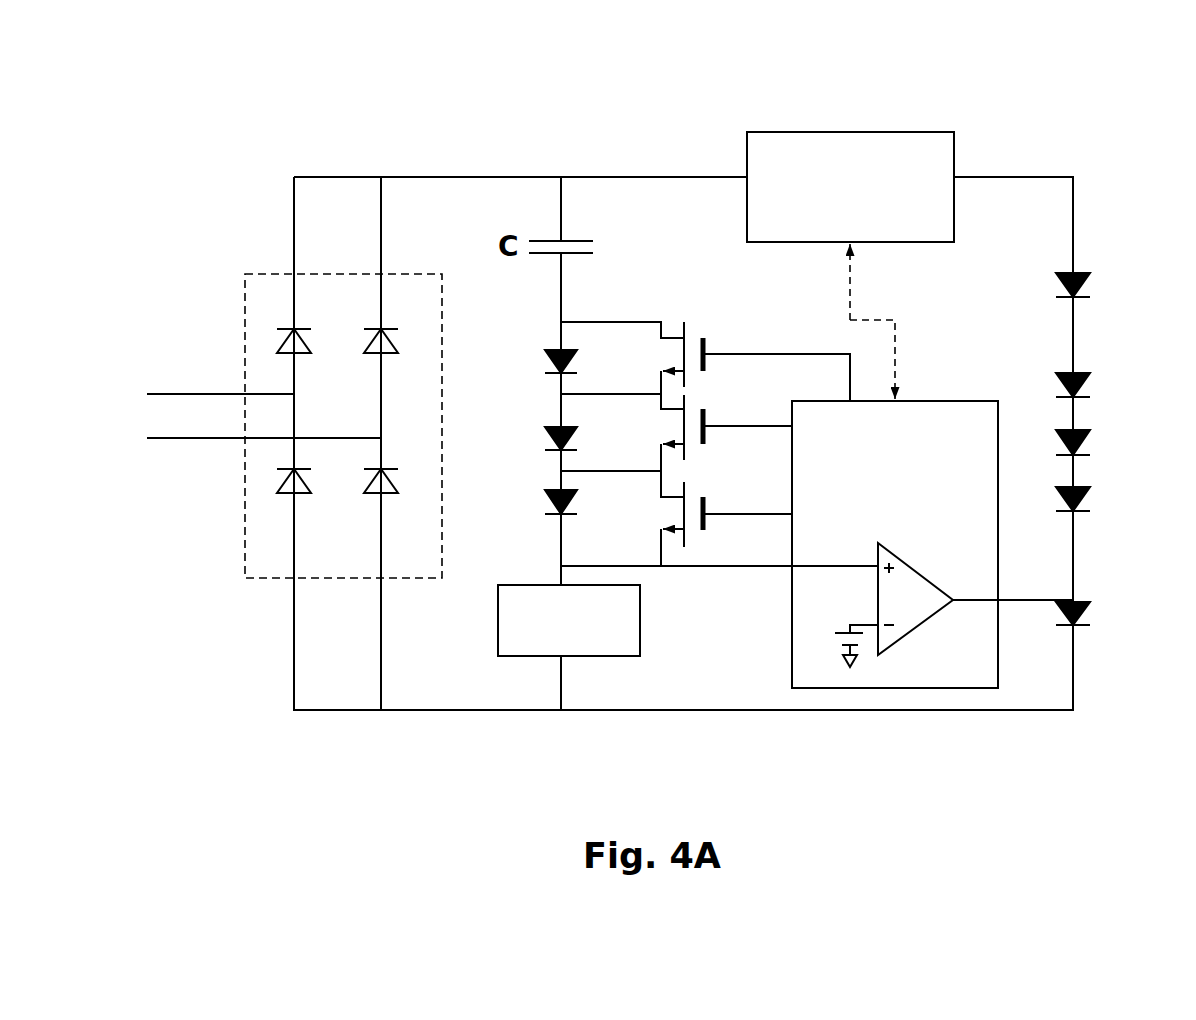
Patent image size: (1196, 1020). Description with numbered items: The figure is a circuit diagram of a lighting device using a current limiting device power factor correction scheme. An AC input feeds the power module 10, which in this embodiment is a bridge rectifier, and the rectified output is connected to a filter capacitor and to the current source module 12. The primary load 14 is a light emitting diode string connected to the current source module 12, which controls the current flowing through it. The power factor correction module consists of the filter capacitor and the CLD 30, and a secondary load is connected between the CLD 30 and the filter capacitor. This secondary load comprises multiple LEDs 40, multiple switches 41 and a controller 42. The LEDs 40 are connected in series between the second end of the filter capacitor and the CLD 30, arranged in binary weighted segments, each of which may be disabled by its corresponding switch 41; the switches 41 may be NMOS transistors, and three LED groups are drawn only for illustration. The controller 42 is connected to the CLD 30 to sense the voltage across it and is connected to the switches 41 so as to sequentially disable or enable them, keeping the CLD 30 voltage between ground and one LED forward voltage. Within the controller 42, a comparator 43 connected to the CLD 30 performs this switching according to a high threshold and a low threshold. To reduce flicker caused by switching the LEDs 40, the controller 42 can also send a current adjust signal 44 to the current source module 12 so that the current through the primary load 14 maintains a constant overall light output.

The power module 10 is at (430, 440).
The current source module 12 is at (927, 147).
The primary load 14 is at (1098, 238).
The CLD 30 is at (632, 643).
The LEDs 40 is at (579, 311).
The switches 41 is at (705, 330).
The controller 42 is at (947, 417).
The comparator 43 is at (910, 590).
The current adjust signal 44 is at (883, 322).